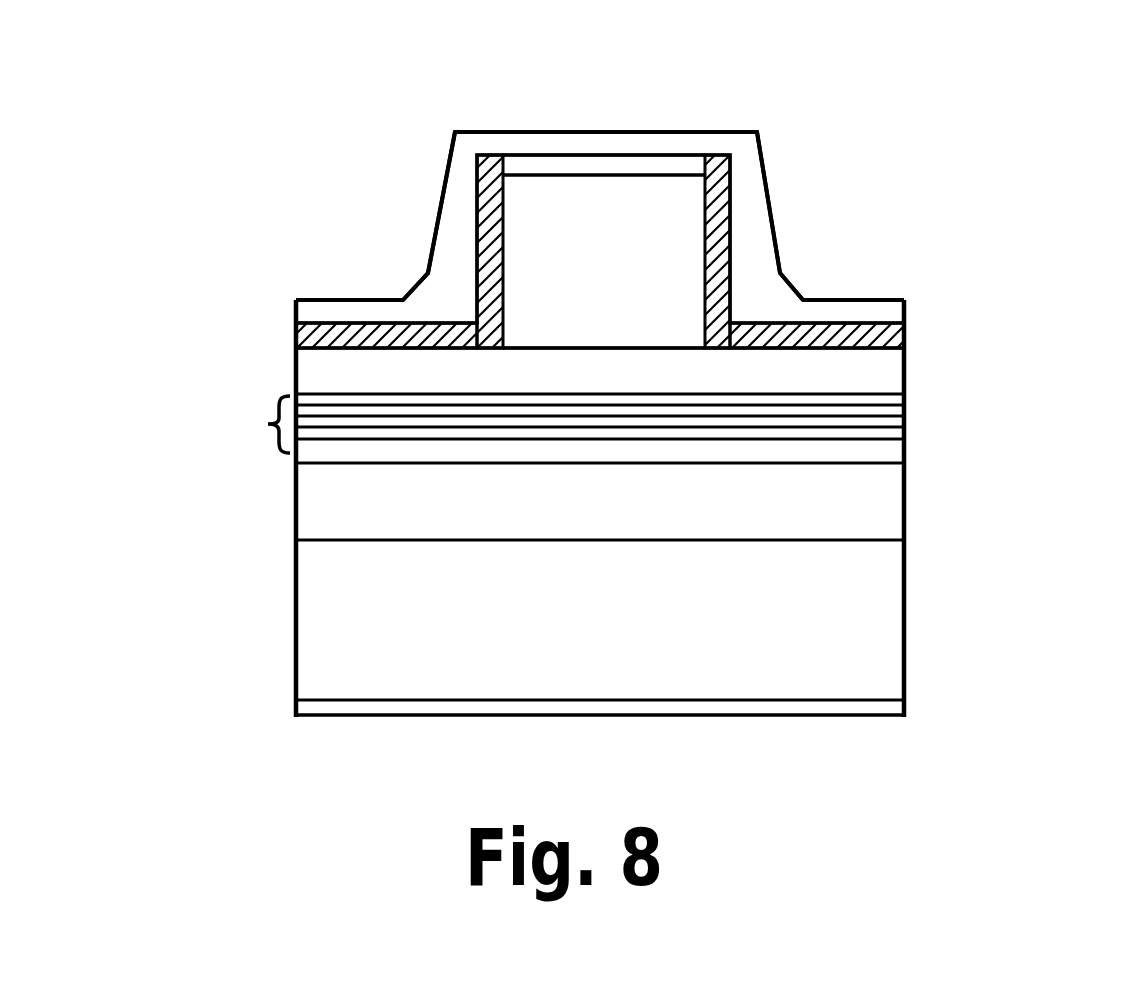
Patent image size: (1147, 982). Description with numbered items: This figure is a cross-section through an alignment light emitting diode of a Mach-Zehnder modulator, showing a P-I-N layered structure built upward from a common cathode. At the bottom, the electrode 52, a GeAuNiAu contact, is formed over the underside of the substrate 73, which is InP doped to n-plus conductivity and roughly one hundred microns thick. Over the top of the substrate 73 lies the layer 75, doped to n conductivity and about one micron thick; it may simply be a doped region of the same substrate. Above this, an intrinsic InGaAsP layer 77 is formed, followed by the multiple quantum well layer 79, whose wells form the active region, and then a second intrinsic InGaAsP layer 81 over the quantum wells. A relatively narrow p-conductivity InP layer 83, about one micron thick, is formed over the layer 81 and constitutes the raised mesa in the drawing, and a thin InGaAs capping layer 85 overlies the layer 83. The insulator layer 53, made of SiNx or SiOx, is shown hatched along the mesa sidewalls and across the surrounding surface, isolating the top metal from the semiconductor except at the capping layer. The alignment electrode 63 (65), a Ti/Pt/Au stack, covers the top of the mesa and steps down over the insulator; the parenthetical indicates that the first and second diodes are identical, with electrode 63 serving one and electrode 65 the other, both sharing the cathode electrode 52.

The alignment electrode 63 is at (690, 186).
The alignment electrode 65 is at (733, 142).
The p conductivity layer 83 is at (658, 228).
The capping layer 85 is at (537, 168).
The insulator layer 53 is at (910, 338).
The multiple quantum well layer 79 is at (265, 424).
The intrinsic layer 81 is at (887, 378).
The intrinsic layer 77 is at (873, 453).
The n conductivity layer 75 is at (388, 518).
The substrate 73 is at (865, 635).
The electrode 52 is at (907, 707).